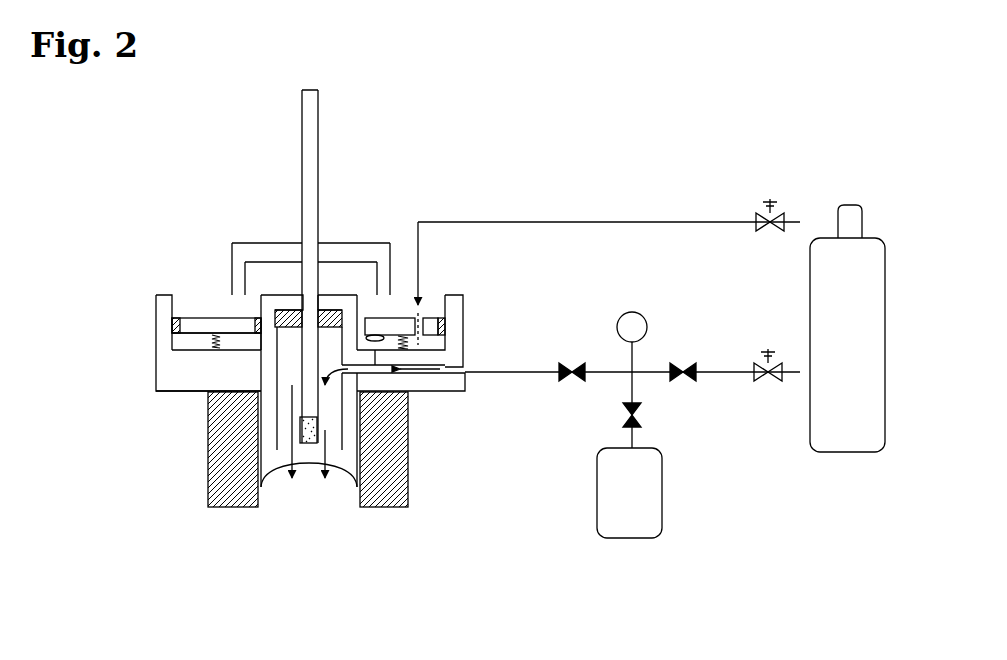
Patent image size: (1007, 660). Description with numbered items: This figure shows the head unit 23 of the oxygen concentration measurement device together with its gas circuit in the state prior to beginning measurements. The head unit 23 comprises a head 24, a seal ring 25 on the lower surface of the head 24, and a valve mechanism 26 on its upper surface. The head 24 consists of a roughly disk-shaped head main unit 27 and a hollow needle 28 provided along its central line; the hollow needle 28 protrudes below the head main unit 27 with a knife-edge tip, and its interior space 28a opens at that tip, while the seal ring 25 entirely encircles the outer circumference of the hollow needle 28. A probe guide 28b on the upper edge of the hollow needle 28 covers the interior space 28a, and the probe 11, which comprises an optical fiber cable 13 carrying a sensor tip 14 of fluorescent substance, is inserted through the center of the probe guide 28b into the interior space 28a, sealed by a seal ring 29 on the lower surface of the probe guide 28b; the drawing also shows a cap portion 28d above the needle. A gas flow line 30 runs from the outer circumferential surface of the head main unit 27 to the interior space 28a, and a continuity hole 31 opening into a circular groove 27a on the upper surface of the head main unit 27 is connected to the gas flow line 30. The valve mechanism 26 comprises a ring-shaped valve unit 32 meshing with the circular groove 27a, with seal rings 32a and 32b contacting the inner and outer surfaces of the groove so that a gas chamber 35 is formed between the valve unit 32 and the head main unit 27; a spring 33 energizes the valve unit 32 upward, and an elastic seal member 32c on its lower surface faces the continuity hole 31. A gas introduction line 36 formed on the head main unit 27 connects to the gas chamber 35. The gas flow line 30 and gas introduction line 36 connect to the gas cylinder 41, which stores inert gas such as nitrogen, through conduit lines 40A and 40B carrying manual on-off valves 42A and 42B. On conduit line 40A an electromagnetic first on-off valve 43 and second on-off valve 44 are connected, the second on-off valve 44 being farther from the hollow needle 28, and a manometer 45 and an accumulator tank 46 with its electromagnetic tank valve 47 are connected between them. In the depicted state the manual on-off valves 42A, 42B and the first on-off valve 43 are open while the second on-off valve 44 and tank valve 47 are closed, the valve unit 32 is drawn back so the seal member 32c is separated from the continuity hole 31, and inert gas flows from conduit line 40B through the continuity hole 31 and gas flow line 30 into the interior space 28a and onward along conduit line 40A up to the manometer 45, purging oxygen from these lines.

The probe 11 is at (320, 128).
The optical fiber cable 13 is at (312, 148).
The sensor tip 14 is at (307, 447).
The head unit 23 is at (414, 223).
The head 24 is at (176, 392).
The seal ring 25 is at (255, 462).
The valve mechanism 26 is at (441, 318).
The head main unit 27 is at (172, 380).
The circular groove 27a is at (180, 296).
The hollow needle 28 is at (238, 488).
The interior space 28a is at (278, 470).
The probe guide 28b is at (285, 307).
The cap 28d is at (337, 258).
The seal ring 29 is at (333, 305).
The gas flow line 30 is at (443, 374).
The continuity hole 31 is at (385, 340).
The valve unit 32 is at (217, 318).
The seal ring 32a is at (222, 318).
The seal ring 32b is at (172, 322).
The seal member 32c is at (398, 372).
The spring 33 is at (213, 342).
The gas chamber 35 is at (436, 342).
The gas introduction line 36 is at (436, 308).
The conduit line 40A is at (534, 370).
The conduit line 40B is at (580, 221).
The gas cylinder 41 is at (825, 238).
The manual on-off valve 42A is at (770, 385).
The manual on-off valve 42B is at (757, 218).
The first on-off valve 43 is at (567, 381).
The second on-off valve 44 is at (690, 381).
The manometer 45 is at (647, 321).
The accumulator tank 46 is at (598, 503).
The tank valve 47 is at (623, 425).